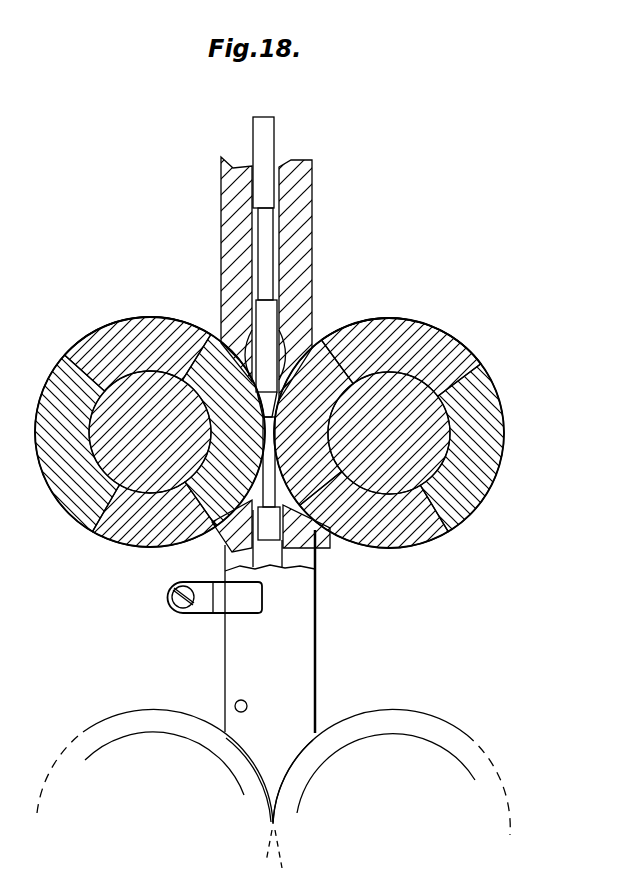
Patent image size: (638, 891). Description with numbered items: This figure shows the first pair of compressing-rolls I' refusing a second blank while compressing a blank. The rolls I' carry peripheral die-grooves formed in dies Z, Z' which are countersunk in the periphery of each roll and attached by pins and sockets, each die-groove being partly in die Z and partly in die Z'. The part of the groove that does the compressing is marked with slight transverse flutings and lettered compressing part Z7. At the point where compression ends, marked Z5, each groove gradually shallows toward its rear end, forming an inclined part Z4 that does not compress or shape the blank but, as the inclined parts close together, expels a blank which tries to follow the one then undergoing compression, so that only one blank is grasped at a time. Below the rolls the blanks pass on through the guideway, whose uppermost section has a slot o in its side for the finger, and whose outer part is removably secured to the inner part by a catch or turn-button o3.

The slot o is at (315, 643).
The catch or turn-button o3 is at (203, 613).
The die Z is at (280, 435).
The die Z' is at (280, 432).
The inclined part Z4 is at (250, 345).
The point where compression ends Z5 is at (270, 410).
The compressing part of the groove Z7 is at (224, 540).
The compressing-rolls I' is at (273, 330).